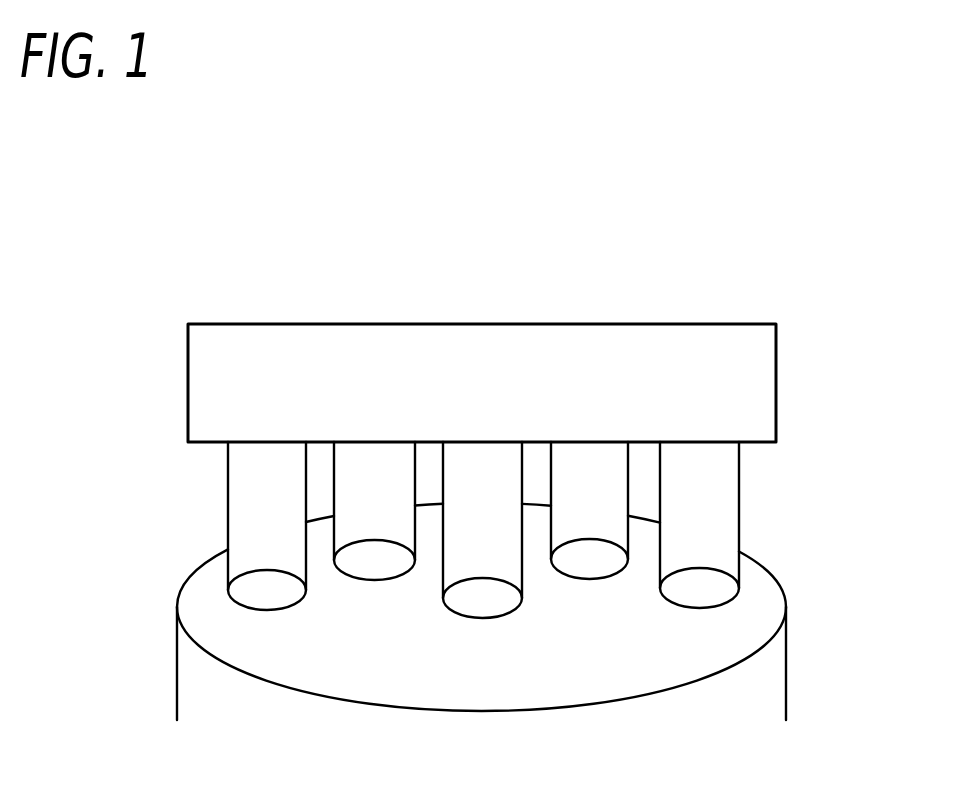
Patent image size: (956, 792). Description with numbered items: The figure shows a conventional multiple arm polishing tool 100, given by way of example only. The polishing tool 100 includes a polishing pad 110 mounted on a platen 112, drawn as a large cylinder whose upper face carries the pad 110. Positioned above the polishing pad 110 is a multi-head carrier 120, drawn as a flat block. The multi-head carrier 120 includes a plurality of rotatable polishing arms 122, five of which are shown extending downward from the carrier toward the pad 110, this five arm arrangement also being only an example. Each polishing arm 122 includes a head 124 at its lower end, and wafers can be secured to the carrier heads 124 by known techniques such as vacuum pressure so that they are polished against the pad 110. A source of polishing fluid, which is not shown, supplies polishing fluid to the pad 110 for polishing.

The polishing tool 100 is at (573, 252).
The polishing pad 110 is at (535, 686).
The platen 112 is at (786, 680).
The multi-head carrier 120 is at (767, 373).
The polishing arms 122 is at (524, 549).
The head 124 is at (693, 606).